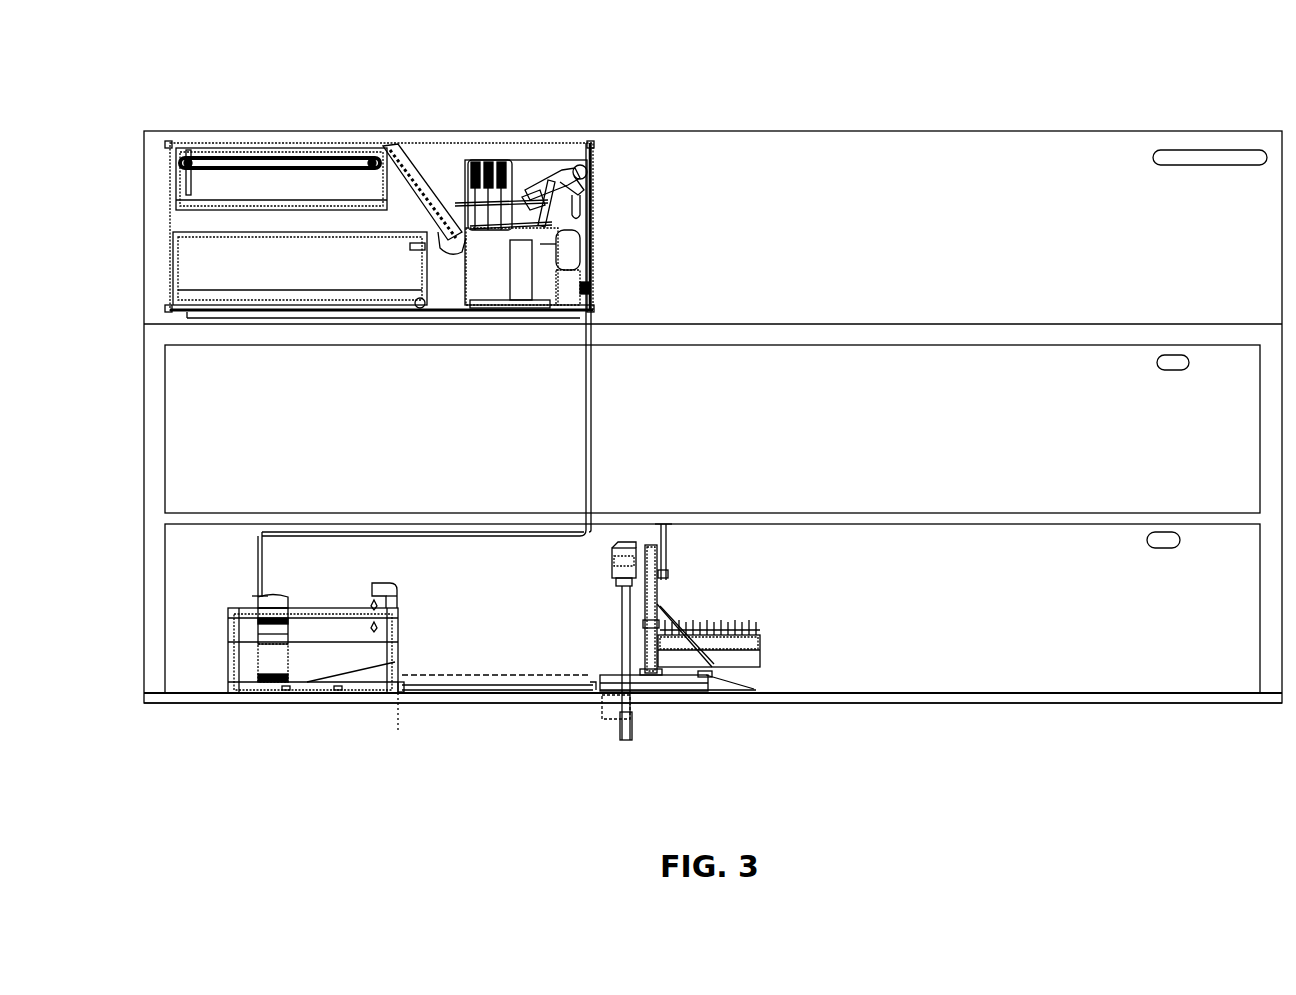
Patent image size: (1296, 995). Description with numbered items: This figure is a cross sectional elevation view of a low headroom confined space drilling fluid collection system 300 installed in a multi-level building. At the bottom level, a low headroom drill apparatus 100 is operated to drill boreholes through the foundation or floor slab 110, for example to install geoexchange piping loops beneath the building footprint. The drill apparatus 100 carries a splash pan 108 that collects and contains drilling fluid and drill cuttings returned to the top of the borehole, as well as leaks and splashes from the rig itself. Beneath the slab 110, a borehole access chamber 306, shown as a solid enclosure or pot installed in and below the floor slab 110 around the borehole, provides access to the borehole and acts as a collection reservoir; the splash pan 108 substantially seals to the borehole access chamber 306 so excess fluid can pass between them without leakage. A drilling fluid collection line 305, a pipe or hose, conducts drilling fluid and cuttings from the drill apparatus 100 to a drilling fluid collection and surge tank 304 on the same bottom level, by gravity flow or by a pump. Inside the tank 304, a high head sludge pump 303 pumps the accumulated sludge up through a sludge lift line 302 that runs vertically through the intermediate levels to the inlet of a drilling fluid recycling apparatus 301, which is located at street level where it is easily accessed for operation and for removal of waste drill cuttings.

The low headroom confined space drilling fluid collection system 300 is at (586, 98).
The drilling fluid recycling apparatus 301 is at (451, 229).
The sludge lift line 302 is at (590, 456).
The sludge pump 303 is at (273, 593).
The drilling fluid collection and surge tank 304 is at (232, 608).
The drilling fluid collection line 305 is at (400, 590).
The borehole access chamber 306 is at (613, 685).
The low headroom drill apparatus 100 is at (663, 586).
The splash pan 108 is at (683, 682).
The foundation or floor slab 110 is at (983, 697).